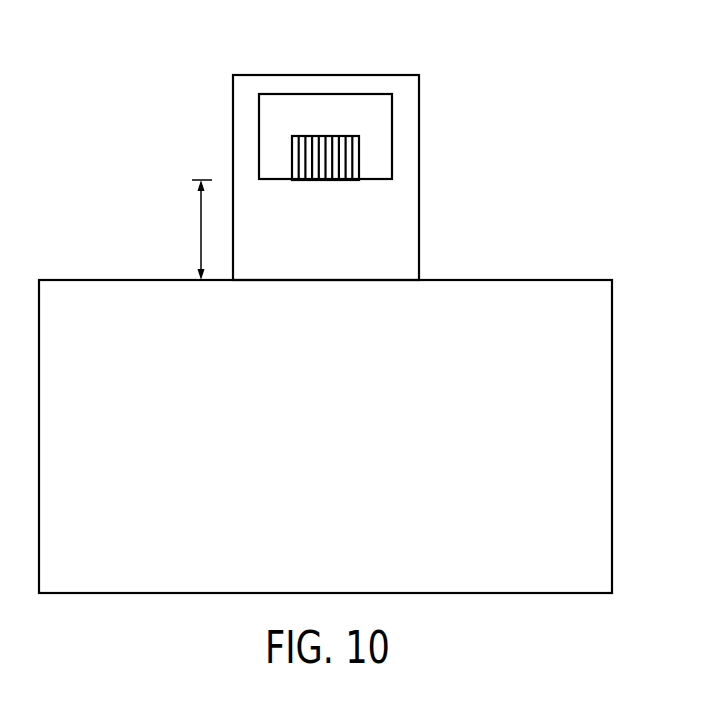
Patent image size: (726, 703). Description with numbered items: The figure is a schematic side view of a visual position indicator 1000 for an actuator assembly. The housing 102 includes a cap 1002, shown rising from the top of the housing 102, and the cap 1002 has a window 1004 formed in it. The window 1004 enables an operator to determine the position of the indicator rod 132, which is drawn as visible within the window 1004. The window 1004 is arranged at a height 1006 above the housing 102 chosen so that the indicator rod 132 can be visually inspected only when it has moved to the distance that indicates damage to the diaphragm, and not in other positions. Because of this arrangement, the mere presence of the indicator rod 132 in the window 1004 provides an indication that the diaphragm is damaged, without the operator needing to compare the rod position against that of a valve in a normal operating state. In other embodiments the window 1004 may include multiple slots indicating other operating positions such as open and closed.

The visual position indicator 1000 is at (494, 33).
The cap 1002 is at (419, 228).
The window 1004 is at (362, 110).
The indicator rod 132 is at (360, 158).
The height 1006 is at (201, 230).
The housing 102 is at (613, 499).